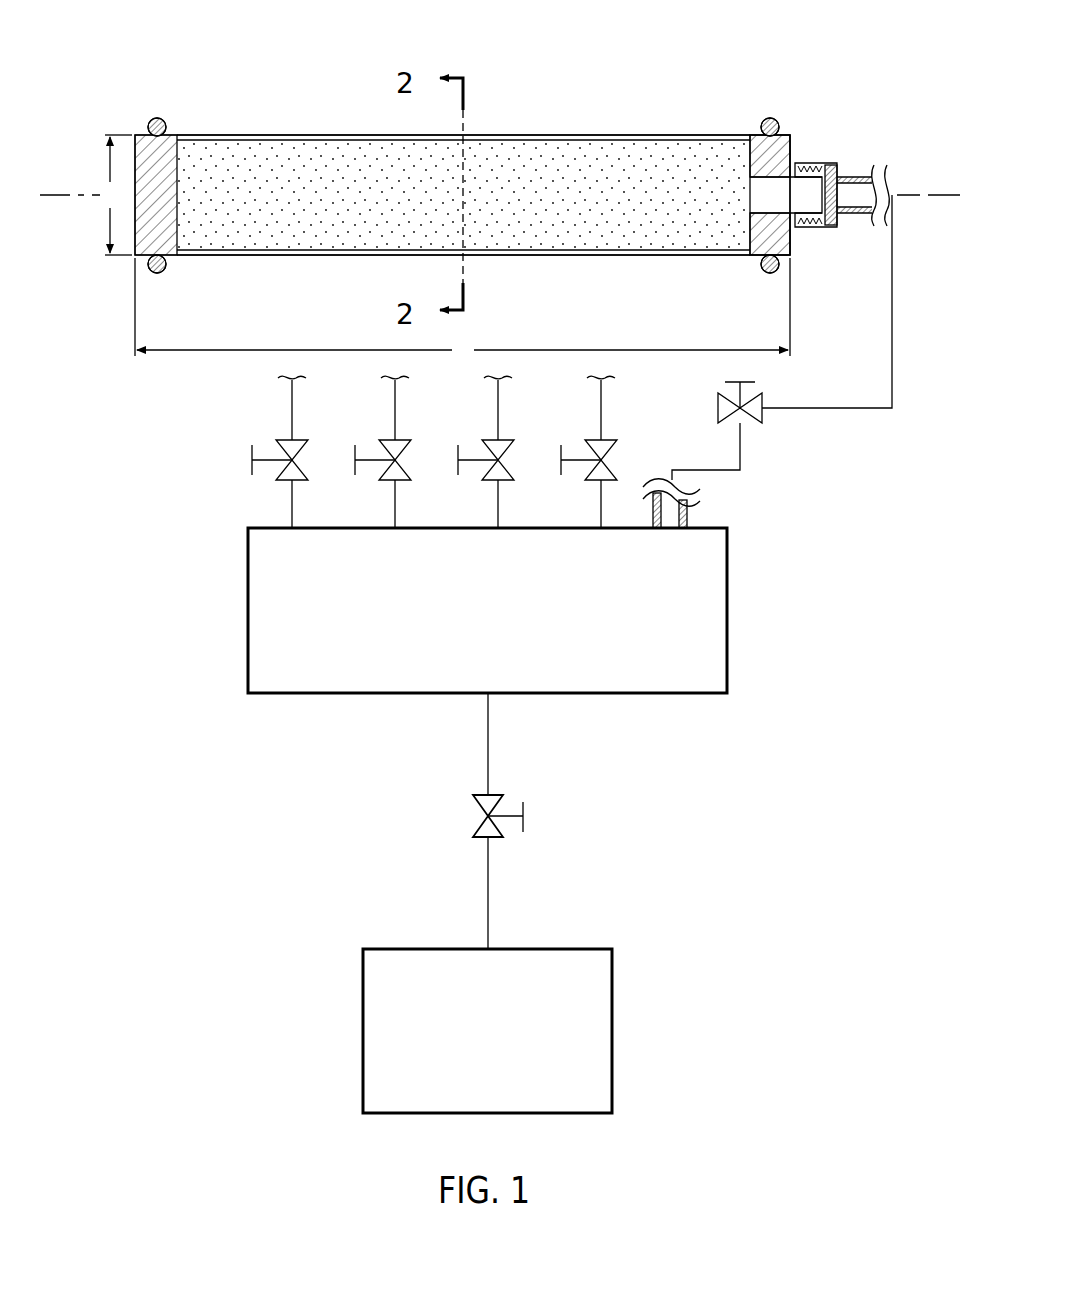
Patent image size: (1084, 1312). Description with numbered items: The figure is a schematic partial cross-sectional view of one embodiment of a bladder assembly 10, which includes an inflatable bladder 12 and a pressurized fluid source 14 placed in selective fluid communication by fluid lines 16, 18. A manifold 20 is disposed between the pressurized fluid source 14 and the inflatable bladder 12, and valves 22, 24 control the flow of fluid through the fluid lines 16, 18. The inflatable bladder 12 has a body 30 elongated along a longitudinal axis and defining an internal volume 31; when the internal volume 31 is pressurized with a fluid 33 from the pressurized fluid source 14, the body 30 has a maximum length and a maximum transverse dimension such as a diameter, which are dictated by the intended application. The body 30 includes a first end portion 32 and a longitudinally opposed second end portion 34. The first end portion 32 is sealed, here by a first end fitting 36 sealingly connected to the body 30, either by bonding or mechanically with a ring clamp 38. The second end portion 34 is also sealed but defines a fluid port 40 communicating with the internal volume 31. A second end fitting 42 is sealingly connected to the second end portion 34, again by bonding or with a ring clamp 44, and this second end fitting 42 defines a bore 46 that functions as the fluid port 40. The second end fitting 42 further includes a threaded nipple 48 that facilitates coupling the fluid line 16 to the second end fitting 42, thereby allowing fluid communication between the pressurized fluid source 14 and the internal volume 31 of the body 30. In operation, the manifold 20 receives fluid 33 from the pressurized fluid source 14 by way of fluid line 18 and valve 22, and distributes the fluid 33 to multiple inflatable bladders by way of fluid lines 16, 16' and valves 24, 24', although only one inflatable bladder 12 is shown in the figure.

The bladder assembly 10 is at (876, 76).
The inflatable bladder 12 is at (255, 99).
The pressurized fluid source 14 is at (613, 1036).
The fluid line 16 is at (767, 361).
The fluid line 16' is at (427, 452).
The fluid line 18 is at (488, 735).
The manifold 20 is at (729, 617).
The valve 22 is at (478, 826).
The valve 24 is at (709, 396).
The valve 24' is at (458, 433).
The body 30 is at (505, 134).
The internal volume 31 is at (586, 183).
The first end portion 32 is at (121, 128).
The fluid 33 is at (415, 208).
The second end portion 34 is at (853, 133).
The first end fitting 36 is at (170, 257).
The ring clamp 38 is at (167, 124).
The fluid port 40 is at (762, 186).
The second end fitting 42 is at (790, 150).
The ring clamp 44 is at (772, 118).
The bore 46 is at (762, 206).
The threaded nipple 48 is at (822, 176).